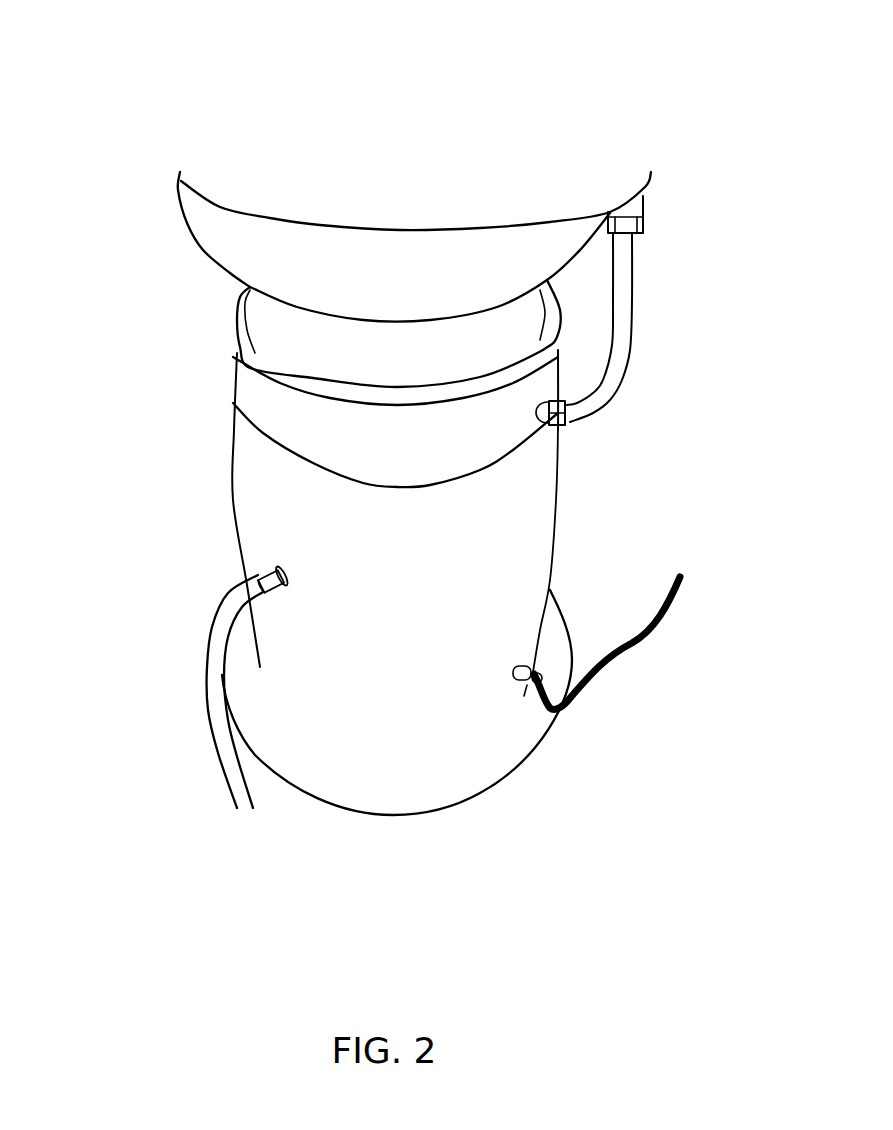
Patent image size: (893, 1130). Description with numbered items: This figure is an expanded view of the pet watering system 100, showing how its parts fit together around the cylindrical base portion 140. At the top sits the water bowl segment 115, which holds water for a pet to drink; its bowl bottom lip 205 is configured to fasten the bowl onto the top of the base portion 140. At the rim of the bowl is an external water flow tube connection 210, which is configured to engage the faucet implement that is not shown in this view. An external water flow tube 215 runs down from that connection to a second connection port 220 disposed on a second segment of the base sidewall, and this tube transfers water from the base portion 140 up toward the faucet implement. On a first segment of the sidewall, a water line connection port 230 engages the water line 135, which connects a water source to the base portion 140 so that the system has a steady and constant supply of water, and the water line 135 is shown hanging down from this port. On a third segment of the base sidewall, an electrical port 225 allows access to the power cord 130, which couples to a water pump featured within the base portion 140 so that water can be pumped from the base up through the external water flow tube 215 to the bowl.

The pet watering system 100 is at (270, 110).
The water bowl segment 115 is at (220, 242).
The bowl bottom lip 205 is at (245, 313).
The base portion 140 is at (290, 723).
The external water flow tube connection 210 is at (642, 193).
The external water flow tube 215 is at (630, 348).
The second connection port 220 is at (547, 427).
The electrical port 225 is at (518, 681).
The power cord 130 is at (640, 645).
The water line connection port 230 is at (264, 572).
The water line 135 is at (208, 688).